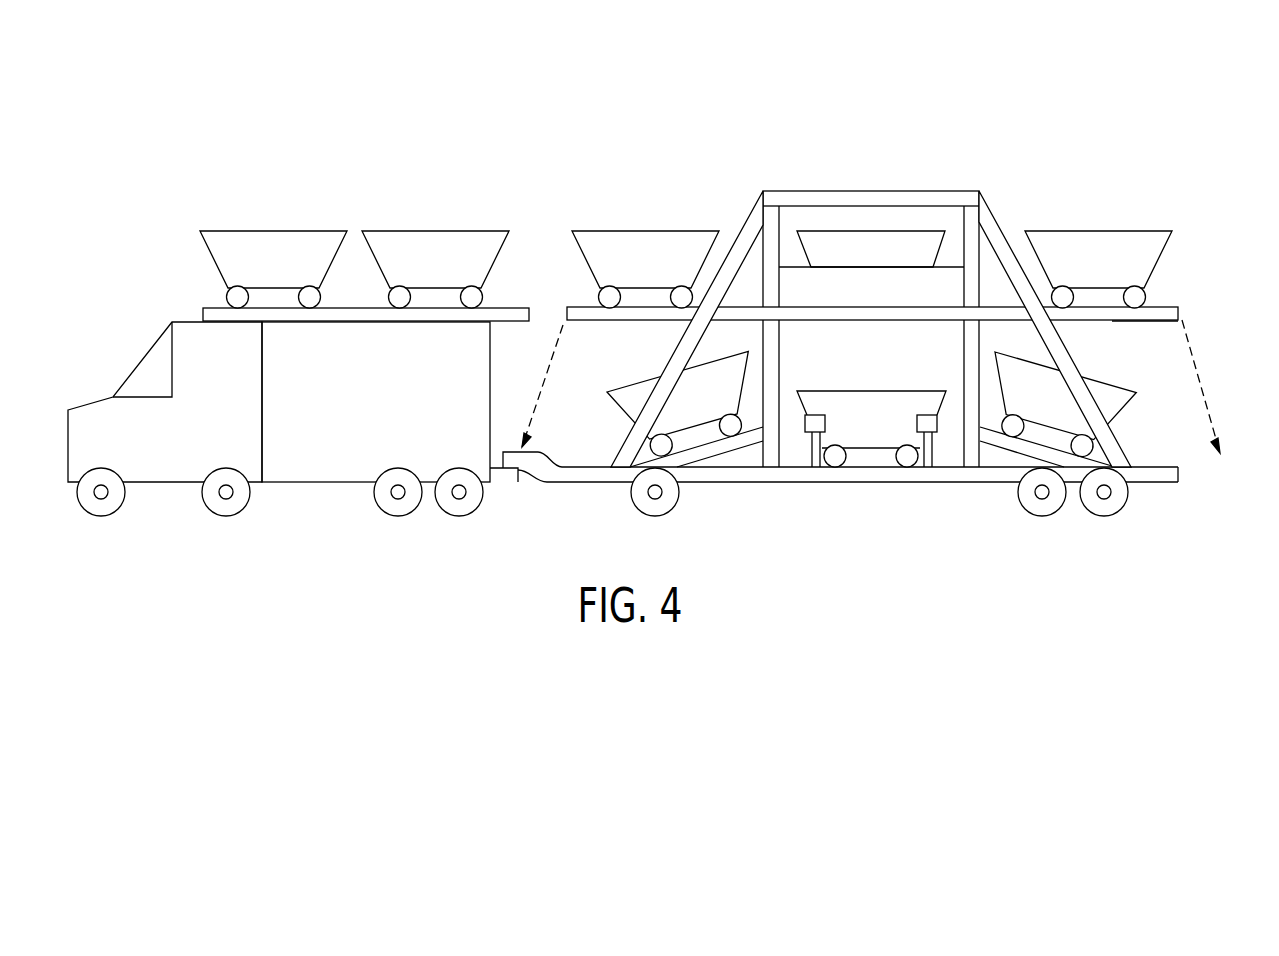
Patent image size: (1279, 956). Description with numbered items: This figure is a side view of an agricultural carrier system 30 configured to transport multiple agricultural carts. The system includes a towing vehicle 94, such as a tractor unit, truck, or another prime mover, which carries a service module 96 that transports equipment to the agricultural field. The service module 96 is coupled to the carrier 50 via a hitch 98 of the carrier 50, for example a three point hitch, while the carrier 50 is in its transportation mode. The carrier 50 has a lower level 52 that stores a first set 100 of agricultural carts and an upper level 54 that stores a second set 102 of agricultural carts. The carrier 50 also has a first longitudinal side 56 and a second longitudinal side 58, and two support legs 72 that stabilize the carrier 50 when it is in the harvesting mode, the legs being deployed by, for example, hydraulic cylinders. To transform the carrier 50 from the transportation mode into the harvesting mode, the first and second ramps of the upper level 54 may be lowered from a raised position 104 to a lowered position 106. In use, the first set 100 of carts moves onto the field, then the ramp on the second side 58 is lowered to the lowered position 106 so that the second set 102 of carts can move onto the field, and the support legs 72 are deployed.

The agricultural carrier system 30 is at (1167, 83).
The carrier 50 is at (805, 200).
The lower level 52 is at (1023, 456).
The upper level 54 is at (1112, 321).
The first longitudinal side 56 is at (590, 200).
The second longitudinal side 58 is at (1152, 200).
The support legs 72 is at (803, 427).
The towing vehicle 94 is at (165, 482).
The service module 96 is at (315, 482).
The hitch 98 is at (525, 460).
The first set of agricultural carts 100 is at (693, 428).
The second set of agricultural carts 102 is at (277, 231).
The raised position 104 is at (565, 313).
The lowered position 106 is at (505, 482).